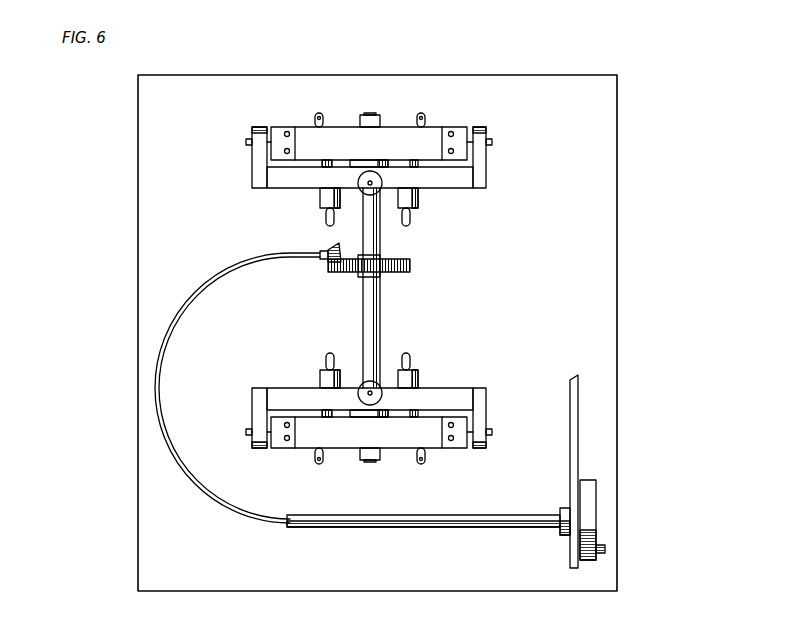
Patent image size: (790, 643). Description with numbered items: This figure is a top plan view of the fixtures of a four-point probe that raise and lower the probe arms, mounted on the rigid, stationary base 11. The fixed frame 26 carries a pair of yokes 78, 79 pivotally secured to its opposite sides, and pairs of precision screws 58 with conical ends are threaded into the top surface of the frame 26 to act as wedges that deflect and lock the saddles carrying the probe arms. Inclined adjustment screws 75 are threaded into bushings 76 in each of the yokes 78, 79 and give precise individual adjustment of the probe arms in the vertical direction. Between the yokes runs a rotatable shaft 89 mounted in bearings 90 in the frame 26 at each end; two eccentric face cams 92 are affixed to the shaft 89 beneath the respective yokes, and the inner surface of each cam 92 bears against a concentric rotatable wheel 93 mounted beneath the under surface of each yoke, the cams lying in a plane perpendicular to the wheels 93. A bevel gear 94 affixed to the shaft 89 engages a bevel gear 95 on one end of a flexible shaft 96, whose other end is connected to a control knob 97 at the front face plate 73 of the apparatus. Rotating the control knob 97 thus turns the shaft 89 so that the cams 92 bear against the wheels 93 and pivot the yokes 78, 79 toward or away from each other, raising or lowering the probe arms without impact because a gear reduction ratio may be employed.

The base 11 is at (603, 275).
The frame 26 is at (401, 133).
The precision screws 58 is at (300, 142).
The front face plate 73 is at (571, 382).
The inclined adjustment screws 75 is at (326, 220).
The bushings 76 is at (320, 200).
The yoke 78 is at (462, 178).
The yoke 79 is at (487, 400).
The rotatable shaft 89 is at (381, 302).
The bearings 90 is at (361, 119).
The eccentric face cams 92 is at (373, 163).
The concentric rotatable disc or wheel 93 is at (380, 192).
The bevel gear 94 is at (412, 266).
The bevel gear 95 is at (339, 252).
The flexible shaft 96 is at (222, 512).
The control knob 97 is at (597, 498).